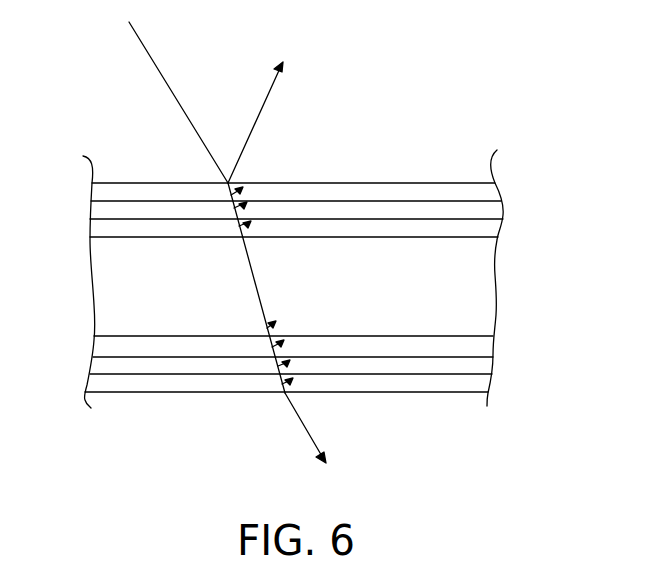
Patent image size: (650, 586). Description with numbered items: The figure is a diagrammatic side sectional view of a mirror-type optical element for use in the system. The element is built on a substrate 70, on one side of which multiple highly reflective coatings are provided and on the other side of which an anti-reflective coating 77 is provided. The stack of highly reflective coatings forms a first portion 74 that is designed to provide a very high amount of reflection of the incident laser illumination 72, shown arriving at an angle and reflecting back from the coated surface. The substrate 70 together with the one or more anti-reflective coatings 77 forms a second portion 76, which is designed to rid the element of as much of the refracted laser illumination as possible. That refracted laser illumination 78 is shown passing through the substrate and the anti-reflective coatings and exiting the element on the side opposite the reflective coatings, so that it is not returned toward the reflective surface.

The substrate 70 is at (98, 272).
The incident laser illumination 72 is at (166, 78).
The first portion 74 is at (526, 165).
The second portion 76 is at (526, 238).
The anti-reflective coating 77 is at (66, 336).
The refracted laser illumination 78 is at (303, 425).